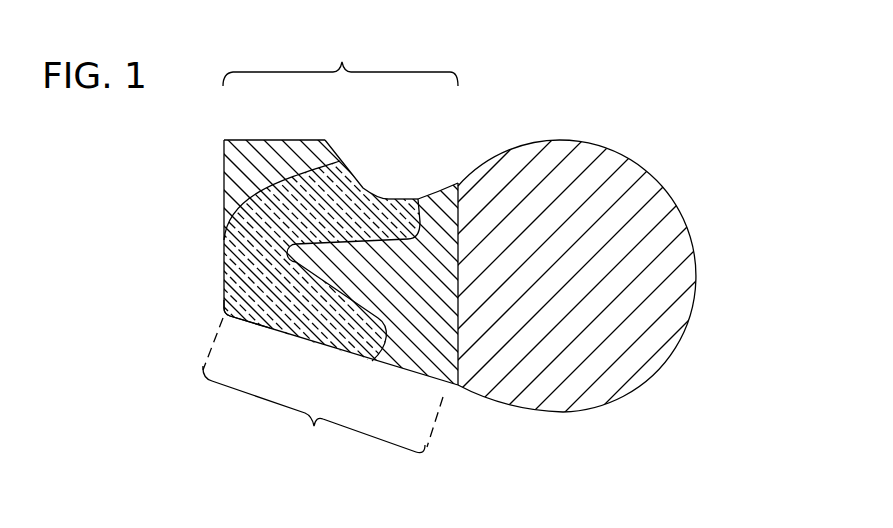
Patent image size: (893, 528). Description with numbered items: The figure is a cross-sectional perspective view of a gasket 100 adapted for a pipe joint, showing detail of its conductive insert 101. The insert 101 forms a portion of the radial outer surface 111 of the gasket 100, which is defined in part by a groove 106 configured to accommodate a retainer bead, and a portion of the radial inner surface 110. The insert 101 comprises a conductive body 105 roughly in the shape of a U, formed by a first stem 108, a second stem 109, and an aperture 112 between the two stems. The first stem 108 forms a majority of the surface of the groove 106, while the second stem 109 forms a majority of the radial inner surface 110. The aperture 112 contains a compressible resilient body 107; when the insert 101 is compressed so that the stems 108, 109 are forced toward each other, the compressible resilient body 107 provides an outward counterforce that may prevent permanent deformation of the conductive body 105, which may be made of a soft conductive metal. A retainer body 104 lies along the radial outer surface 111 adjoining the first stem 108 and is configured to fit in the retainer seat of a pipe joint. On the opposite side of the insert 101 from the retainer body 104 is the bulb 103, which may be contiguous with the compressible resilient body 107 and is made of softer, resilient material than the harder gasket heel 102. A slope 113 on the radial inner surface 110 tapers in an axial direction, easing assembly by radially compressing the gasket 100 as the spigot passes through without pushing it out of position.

The gasket 100 is at (649, 112).
The insert 101 is at (265, 338).
The gasket heel 102 is at (340, 59).
The bulb 103 is at (696, 277).
The retainer body 104 is at (223, 180).
The conductive body 105 is at (245, 265).
The groove 106 is at (403, 198).
The compressible resilient body 107 is at (421, 334).
The first stem 108 is at (321, 160).
The second stem 109 is at (328, 350).
The radial inner surface 110 is at (426, 380).
The radial outer surface 111 is at (245, 140).
The aperture 112 is at (387, 284).
The slope 113 is at (323, 389).